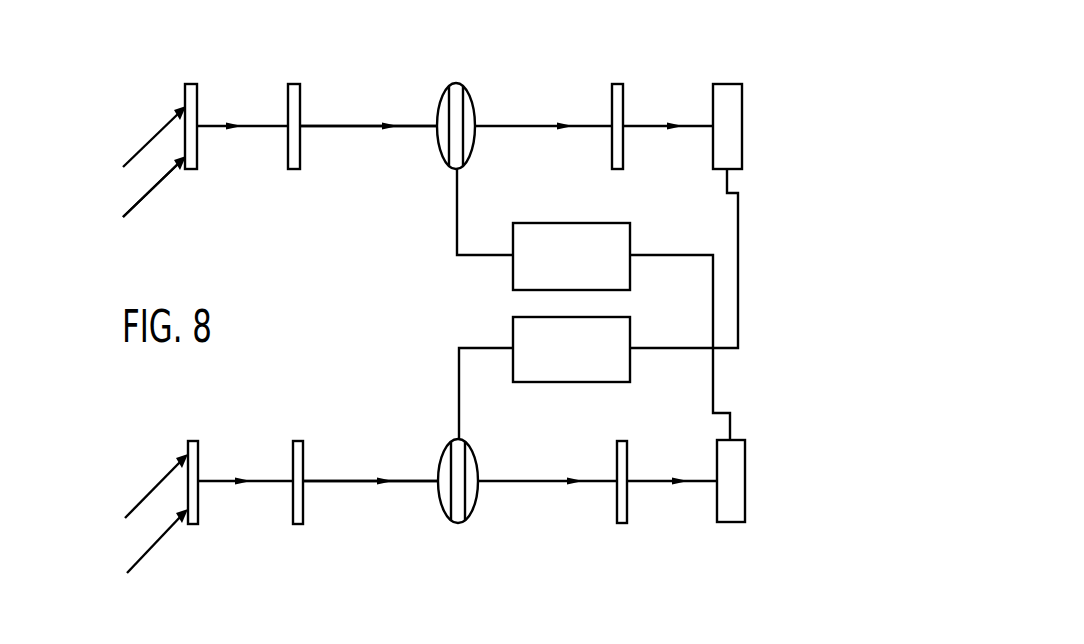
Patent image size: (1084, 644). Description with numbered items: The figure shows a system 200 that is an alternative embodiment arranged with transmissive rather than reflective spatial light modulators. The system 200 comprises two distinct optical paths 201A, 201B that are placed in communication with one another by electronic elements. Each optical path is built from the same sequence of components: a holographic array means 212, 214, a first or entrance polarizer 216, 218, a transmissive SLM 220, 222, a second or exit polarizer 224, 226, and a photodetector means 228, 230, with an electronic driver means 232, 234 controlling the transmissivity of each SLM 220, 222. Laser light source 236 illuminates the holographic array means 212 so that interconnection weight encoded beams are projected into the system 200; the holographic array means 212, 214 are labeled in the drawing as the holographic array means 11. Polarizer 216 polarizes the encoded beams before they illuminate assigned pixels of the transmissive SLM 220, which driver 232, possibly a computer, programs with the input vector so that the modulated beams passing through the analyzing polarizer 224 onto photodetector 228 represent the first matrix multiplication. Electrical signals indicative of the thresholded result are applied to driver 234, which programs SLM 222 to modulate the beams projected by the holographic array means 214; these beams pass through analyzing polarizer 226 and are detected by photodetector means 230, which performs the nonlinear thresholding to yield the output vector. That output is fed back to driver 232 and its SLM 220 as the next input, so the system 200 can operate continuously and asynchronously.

The holographic array means 11 is at (130, 232).
The system 200 is at (768, 283).
The optical path 201A is at (355, 126).
The optical path 201B is at (337, 481).
The holographic array means 212 is at (197, 98).
The holographic array means 214 is at (200, 467).
The first or entrance polarizer 216 is at (300, 98).
The first or entrance polarizer 218 is at (293, 455).
The transmissive SLM 220 is at (442, 160).
The transmissive SLM 222 is at (478, 455).
The second or exit polarizer 224 is at (625, 93).
The second or exit polarizer 226 is at (627, 450).
The photodetector means 228 is at (745, 102).
The photodetector means 230 is at (745, 462).
The electronic driver means 232 is at (512, 278).
The electronic driver means 234 is at (633, 327).
The laser light source 236 is at (135, 207).